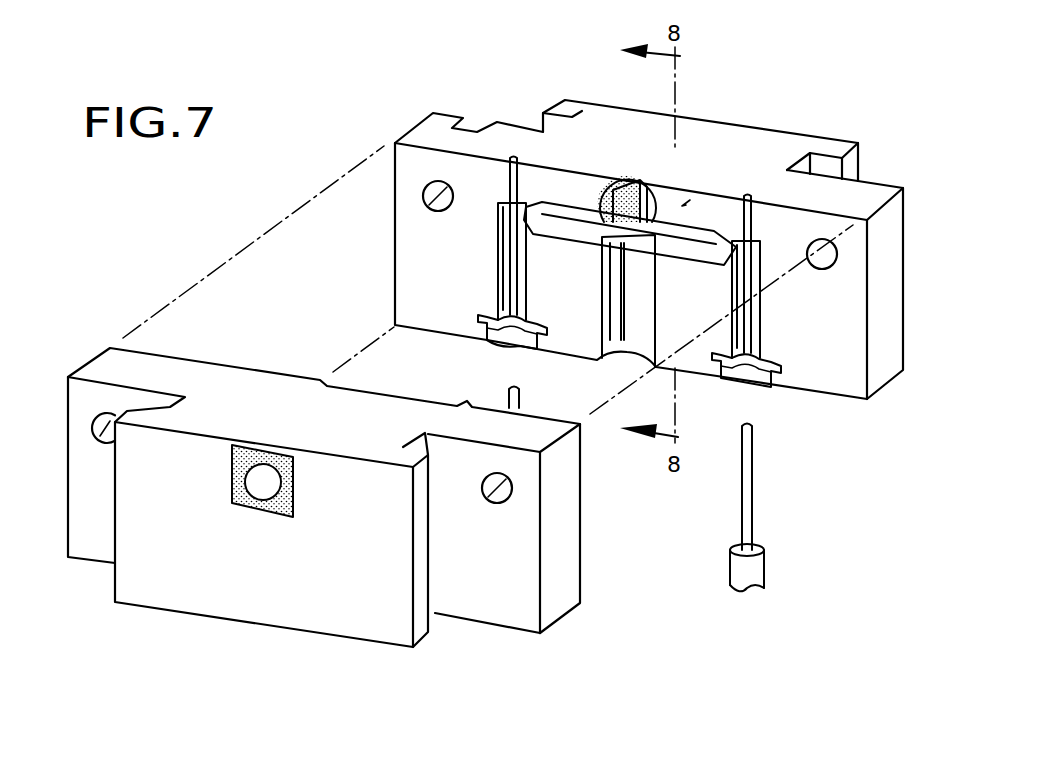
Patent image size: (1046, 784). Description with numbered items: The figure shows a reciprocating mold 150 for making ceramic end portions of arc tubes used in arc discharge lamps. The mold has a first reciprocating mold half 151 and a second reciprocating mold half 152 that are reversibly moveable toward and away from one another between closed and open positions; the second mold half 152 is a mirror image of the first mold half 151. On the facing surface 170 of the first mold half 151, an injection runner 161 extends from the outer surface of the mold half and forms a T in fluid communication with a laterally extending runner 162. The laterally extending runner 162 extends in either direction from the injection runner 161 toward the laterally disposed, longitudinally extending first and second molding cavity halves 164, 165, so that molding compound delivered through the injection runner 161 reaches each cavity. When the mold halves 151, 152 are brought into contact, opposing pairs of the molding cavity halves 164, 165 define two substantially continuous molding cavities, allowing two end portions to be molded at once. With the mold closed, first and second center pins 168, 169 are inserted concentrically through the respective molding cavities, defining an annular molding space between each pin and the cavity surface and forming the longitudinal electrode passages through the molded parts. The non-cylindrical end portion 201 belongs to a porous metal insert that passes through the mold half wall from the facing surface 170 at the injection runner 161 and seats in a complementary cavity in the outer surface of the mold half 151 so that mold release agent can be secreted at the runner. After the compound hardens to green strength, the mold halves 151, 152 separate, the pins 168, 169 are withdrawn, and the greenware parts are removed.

The reciprocating mold 150 is at (194, 211).
The first reciprocating mold half 151 is at (433, 124).
The second reciprocating mold half 152 is at (105, 356).
The injection runner 161 is at (631, 200).
The laterally extending runner 162 is at (703, 250).
The first molding cavity half 164 is at (503, 263).
The second molding cavity half 165 is at (752, 325).
The first center pin 168 is at (507, 400).
The second center pin 169 is at (748, 515).
The facing surface 170 is at (682, 206).
The non-cylindrical end portion 201 is at (240, 497).